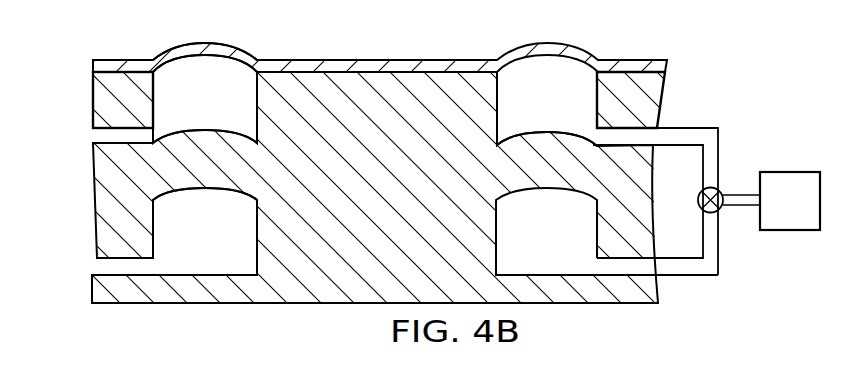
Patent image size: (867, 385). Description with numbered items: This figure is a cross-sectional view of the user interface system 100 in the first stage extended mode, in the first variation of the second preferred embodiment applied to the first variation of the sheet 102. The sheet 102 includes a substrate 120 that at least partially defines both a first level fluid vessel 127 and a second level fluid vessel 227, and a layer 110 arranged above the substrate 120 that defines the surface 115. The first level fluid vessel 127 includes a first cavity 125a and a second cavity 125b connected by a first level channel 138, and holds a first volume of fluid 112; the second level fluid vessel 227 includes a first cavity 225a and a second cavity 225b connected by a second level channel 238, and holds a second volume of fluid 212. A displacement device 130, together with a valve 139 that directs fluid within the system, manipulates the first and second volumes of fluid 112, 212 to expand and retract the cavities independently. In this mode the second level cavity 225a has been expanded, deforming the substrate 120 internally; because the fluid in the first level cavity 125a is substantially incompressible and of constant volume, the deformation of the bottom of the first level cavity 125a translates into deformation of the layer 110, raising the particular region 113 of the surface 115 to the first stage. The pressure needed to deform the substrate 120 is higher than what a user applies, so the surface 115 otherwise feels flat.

The user interface system 100 is at (54, 80).
The sheet 102 is at (82, 60).
The layer 110 is at (115, 65).
The first volume of fluid 112 is at (168, 82).
The particular region of the surface 113 is at (220, 36).
The surface 115 is at (430, 62).
The substrate 120 is at (138, 137).
The first cavity of the first level fluid vessel 125a is at (228, 109).
The second cavity of the first level fluid vessel 125b is at (570, 109).
The first level fluid vessel 127 is at (167, 122).
The displacement device 130 is at (808, 211).
The first level channel 138 is at (102, 135).
The valve 139 is at (720, 191).
The second volume of fluid 212 is at (225, 257).
The first cavity of the second level fluid vessel 225a is at (228, 243).
The second cavity of the second level fluid vessel 225b is at (570, 243).
The second level fluid vessel 227 is at (173, 260).
The second level channel 238 is at (107, 265).